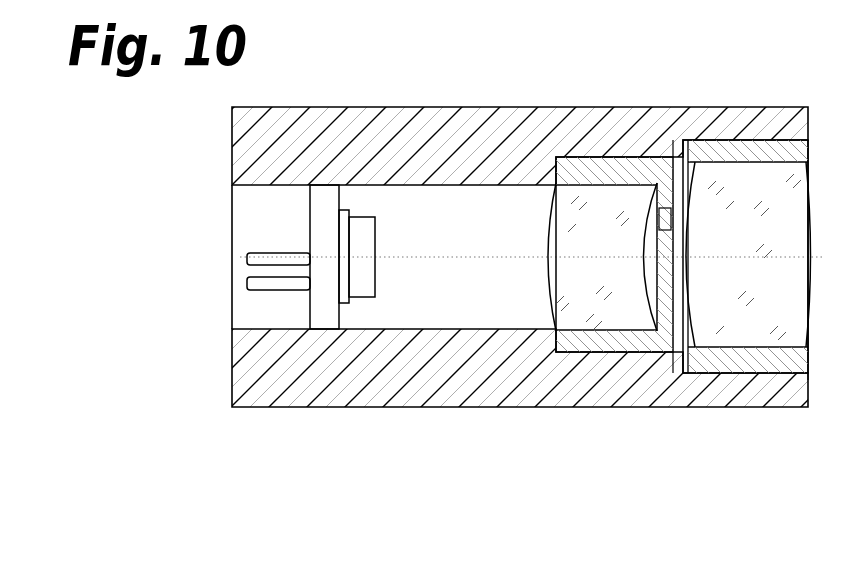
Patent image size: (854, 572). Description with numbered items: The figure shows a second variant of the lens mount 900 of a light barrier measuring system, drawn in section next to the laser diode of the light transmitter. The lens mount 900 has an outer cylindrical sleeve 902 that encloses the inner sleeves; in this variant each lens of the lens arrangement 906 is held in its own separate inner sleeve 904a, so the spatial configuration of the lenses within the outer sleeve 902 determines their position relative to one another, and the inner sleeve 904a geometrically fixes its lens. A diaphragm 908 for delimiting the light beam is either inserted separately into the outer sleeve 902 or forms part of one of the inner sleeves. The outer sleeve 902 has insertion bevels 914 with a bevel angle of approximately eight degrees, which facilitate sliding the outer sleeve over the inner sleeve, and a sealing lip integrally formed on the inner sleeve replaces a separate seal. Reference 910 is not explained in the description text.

The lens mount 900 is at (142, 418).
The outer cylindrical sleeve 902 is at (386, 359).
The inner sleeve 904a is at (660, 354).
The lens arrangement 906 is at (731, 314).
The diaphragm 908 is at (655, 212).
The retaining ring 910 is at (784, 142).
The insertion bevels 914 is at (661, 146).